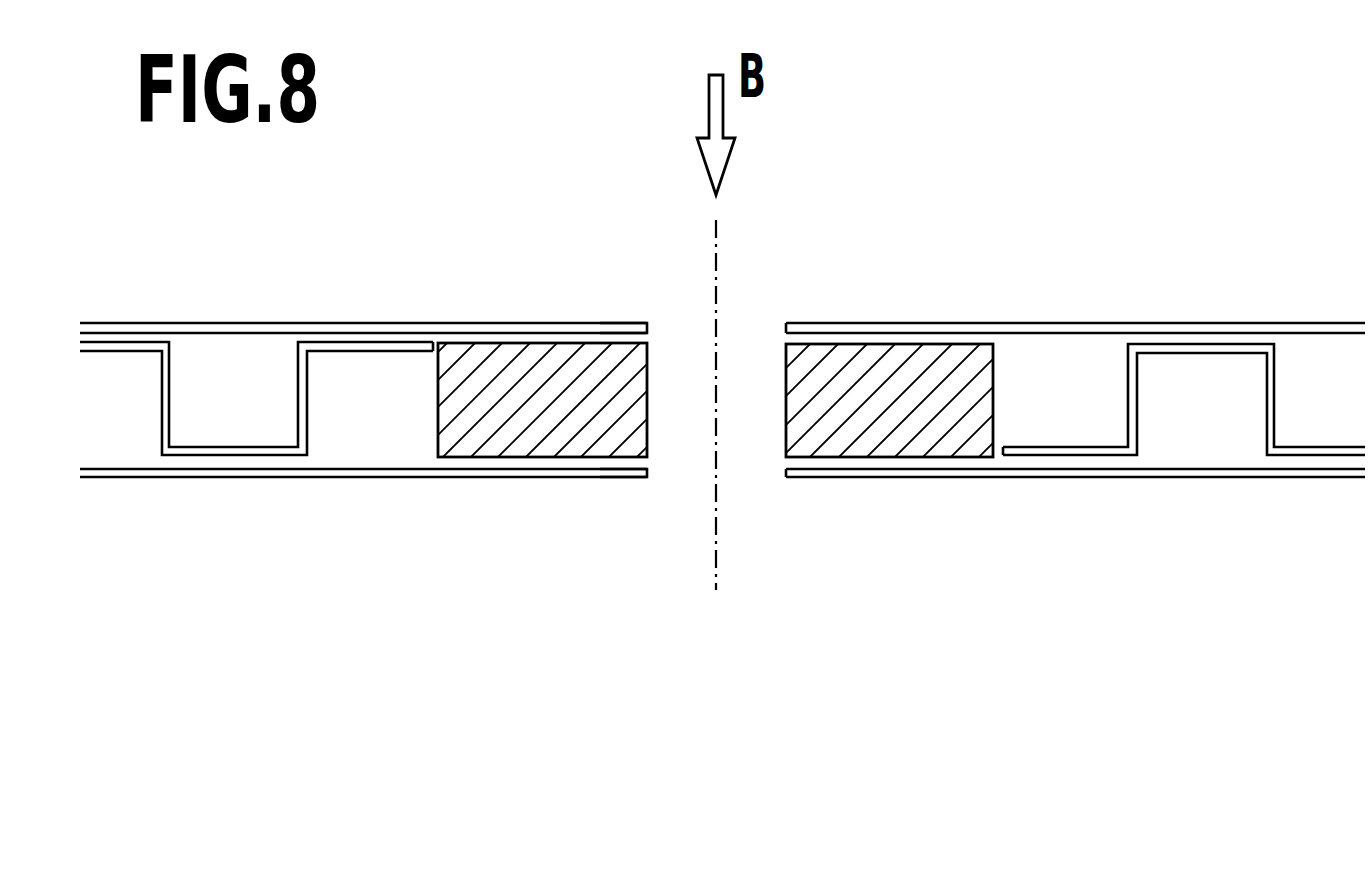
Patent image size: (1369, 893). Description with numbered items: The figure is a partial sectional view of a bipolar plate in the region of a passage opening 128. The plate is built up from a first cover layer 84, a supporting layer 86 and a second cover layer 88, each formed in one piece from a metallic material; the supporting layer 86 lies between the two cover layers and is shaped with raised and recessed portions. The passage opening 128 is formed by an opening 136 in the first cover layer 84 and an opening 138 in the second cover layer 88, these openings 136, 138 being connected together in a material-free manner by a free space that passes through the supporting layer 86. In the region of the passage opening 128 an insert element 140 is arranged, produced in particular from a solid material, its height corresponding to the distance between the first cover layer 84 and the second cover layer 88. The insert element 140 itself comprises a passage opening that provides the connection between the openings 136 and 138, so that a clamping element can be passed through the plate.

The first cover layer 84 is at (383, 472).
The supporting layer 86 is at (165, 415).
The second cover layer 88 is at (452, 330).
The passage opening 128 is at (786, 405).
The opening in the first cover layer 136 is at (647, 472).
The opening in the second cover layer 138 is at (647, 328).
The insert element 140 is at (536, 433).